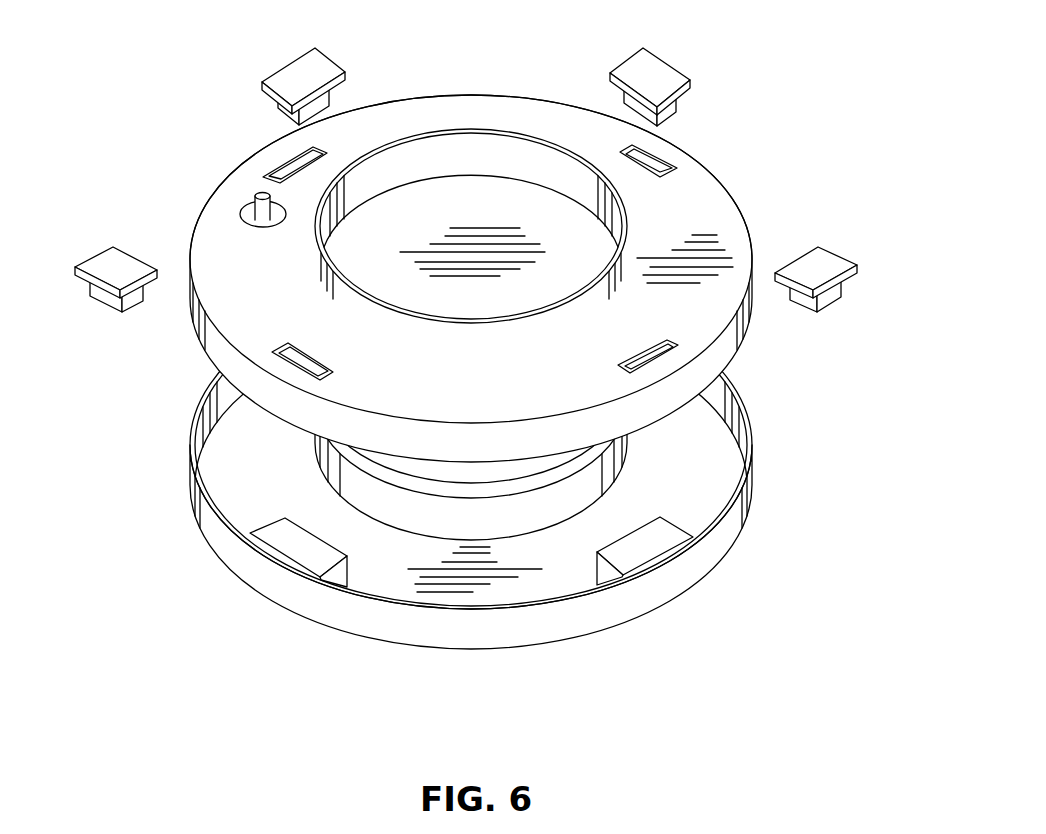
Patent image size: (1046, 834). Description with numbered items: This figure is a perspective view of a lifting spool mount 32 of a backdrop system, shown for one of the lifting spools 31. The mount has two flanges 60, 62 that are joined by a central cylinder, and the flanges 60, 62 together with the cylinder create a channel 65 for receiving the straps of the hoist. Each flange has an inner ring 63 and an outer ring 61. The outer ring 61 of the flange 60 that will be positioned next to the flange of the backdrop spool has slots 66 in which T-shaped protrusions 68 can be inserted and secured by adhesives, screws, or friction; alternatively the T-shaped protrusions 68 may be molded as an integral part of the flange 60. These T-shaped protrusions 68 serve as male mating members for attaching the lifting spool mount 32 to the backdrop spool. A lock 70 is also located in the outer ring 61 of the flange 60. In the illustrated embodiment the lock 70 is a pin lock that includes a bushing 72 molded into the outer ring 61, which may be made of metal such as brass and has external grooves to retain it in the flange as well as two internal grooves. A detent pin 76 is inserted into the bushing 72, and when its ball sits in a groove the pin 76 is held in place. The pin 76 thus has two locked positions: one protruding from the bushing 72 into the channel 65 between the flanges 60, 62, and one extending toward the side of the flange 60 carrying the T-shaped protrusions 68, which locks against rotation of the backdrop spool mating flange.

The lifting spool 31 is at (790, 452).
The lifting spool mount 32 is at (870, 352).
The flange 60 is at (422, 278).
The outer ring 61 is at (497, 396).
The flange 62 is at (522, 489).
The inner ring 63 is at (618, 482).
The channel 65 is at (697, 473).
The slots 66 is at (315, 148).
The T-shaped protrusions 68 is at (302, 64).
The lock 70 is at (249, 224).
The bushing 72 is at (247, 218).
The detent pin 76 is at (256, 200).